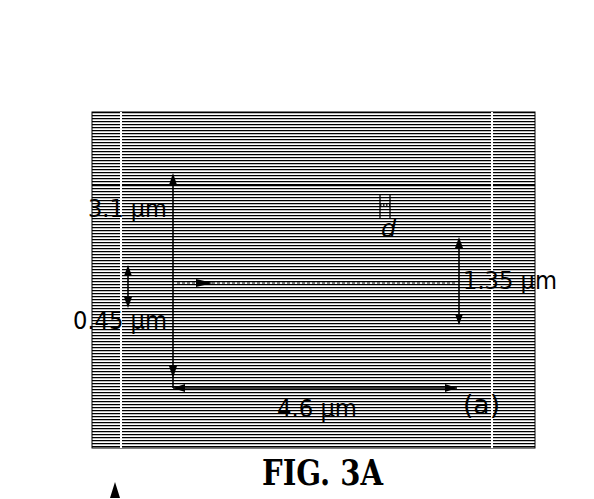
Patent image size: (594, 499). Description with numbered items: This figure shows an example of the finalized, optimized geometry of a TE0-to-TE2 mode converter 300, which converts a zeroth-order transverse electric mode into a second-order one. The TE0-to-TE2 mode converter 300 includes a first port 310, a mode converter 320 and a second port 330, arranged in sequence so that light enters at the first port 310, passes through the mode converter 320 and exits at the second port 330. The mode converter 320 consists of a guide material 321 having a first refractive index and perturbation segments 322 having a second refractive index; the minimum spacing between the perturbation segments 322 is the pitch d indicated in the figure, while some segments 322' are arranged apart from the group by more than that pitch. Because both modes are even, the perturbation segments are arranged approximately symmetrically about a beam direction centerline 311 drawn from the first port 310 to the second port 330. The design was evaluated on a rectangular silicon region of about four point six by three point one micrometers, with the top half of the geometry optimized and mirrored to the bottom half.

The TE0-to-TE2 mode converter 300 is at (103, 70).
The first port 310 is at (148, 262).
The beam direction centerline 311 is at (370, 282).
The mode converter 320 is at (227, 177).
The guide material 321 is at (312, 200).
The perturbation segments 322 is at (366, 217).
The segments 322' is at (243, 223).
The second port 330 is at (485, 240).